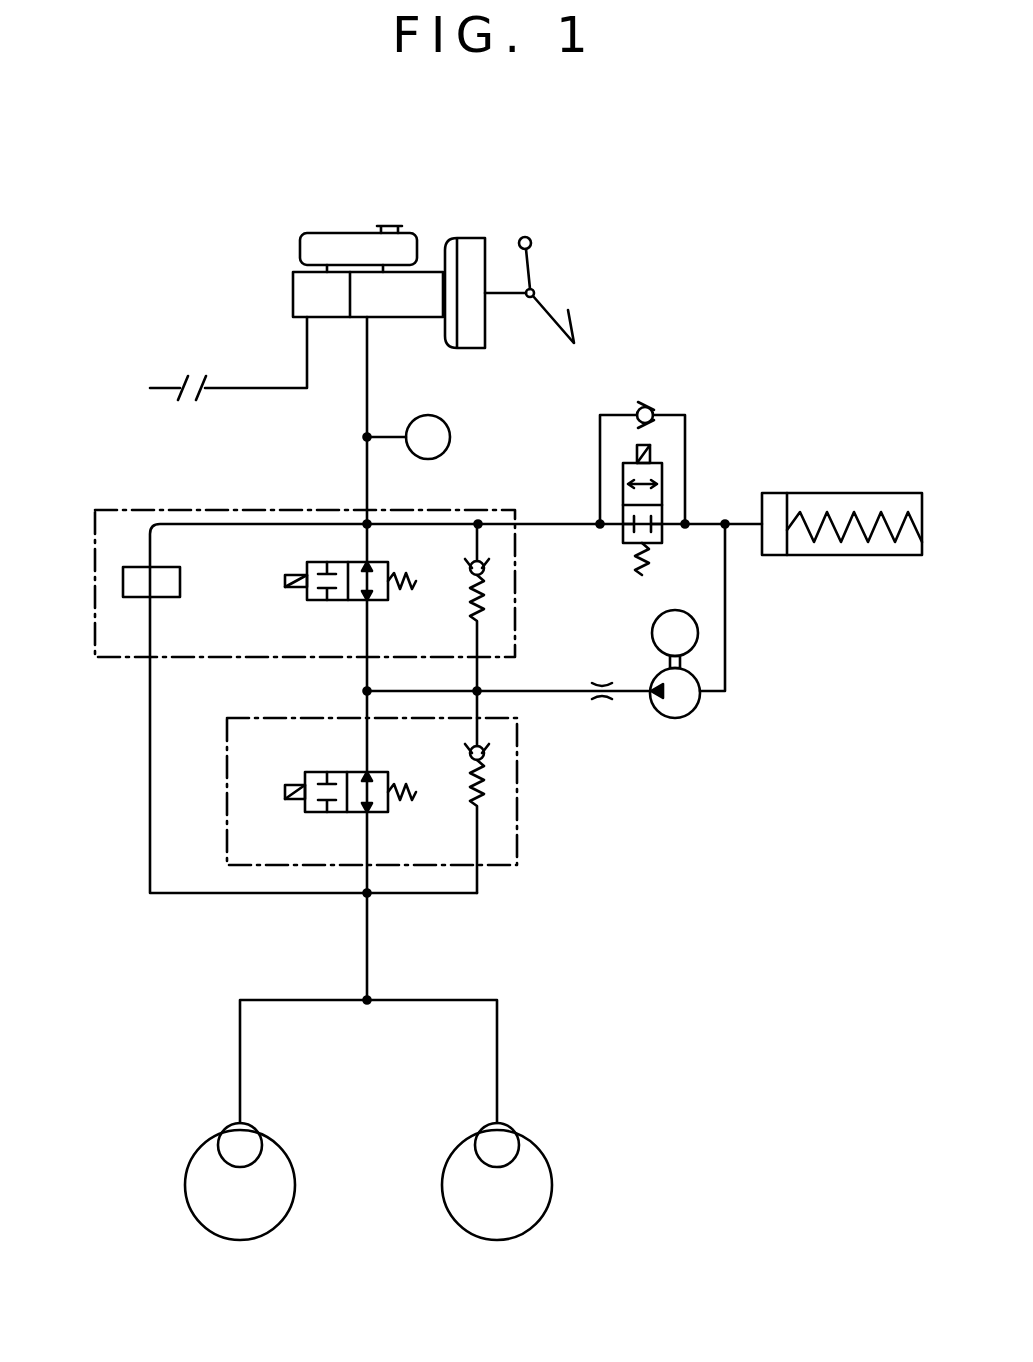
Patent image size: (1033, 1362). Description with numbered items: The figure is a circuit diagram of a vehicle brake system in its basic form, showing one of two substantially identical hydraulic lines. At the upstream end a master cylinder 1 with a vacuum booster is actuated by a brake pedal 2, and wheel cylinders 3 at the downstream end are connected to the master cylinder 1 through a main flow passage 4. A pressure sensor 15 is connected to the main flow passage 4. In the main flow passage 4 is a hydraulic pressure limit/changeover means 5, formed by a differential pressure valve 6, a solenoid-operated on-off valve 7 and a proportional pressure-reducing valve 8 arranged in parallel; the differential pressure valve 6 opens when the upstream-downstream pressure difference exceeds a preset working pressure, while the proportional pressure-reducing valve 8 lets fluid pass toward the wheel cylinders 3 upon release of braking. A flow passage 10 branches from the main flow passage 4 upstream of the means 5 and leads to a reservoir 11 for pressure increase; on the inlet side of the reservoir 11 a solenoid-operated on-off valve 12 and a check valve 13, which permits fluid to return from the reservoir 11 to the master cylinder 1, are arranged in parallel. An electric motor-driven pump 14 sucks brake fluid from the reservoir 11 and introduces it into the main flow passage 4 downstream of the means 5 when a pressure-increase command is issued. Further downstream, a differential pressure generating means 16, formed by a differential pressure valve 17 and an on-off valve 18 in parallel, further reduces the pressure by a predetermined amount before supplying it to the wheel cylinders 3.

The master cylinder 1 is at (293, 280).
The brake pedal 2 is at (543, 300).
The wheel cylinders 3 is at (255, 1138).
The main flow passage 4 is at (368, 382).
The hydraulic pressure limit/changeover means 5 is at (120, 503).
The differential pressure valve 6 is at (485, 563).
The solenoid-operated on-off valve 7 is at (383, 560).
The proportional pressure-reducing valve 8 is at (123, 587).
The flow passage 10 is at (555, 522).
The reservoir 11 is at (867, 493).
The solenoid-operated on-off valve 12 is at (663, 492).
The check valve 13 is at (645, 402).
The electric motor-driven pump 14 is at (683, 713).
The pressure sensor 15 is at (450, 437).
The differential pressure generating means 16 is at (520, 808).
The differential pressure valve 17 is at (487, 745).
The on-off valve 18 is at (382, 812).